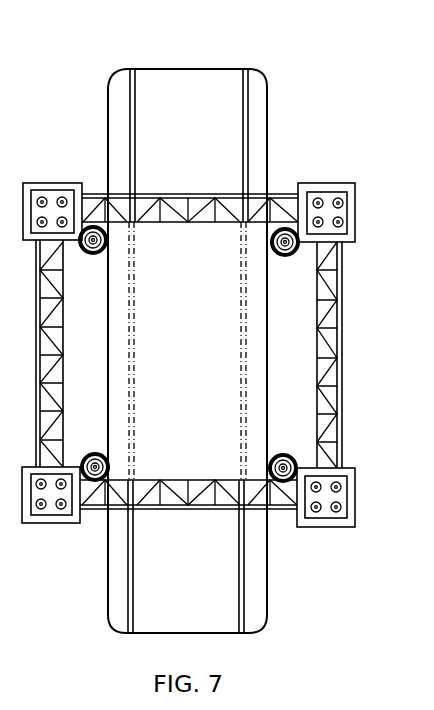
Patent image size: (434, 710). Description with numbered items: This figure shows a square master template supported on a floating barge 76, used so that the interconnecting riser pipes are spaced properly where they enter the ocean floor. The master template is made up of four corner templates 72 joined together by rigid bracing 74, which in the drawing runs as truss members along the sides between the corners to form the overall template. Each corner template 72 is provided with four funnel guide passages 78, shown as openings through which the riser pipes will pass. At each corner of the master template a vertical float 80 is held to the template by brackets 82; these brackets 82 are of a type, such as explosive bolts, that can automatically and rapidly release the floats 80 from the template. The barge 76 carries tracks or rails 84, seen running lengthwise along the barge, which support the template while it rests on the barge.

The corner template 72 is at (322, 183).
The rigid bracing 74 is at (342, 352).
The floating barge 76 is at (190, 78).
The funnel guide passage 78 is at (343, 203).
The vertical float 80 is at (292, 455).
The bracket 82 is at (318, 447).
The tracks or rails 84 is at (247, 143).